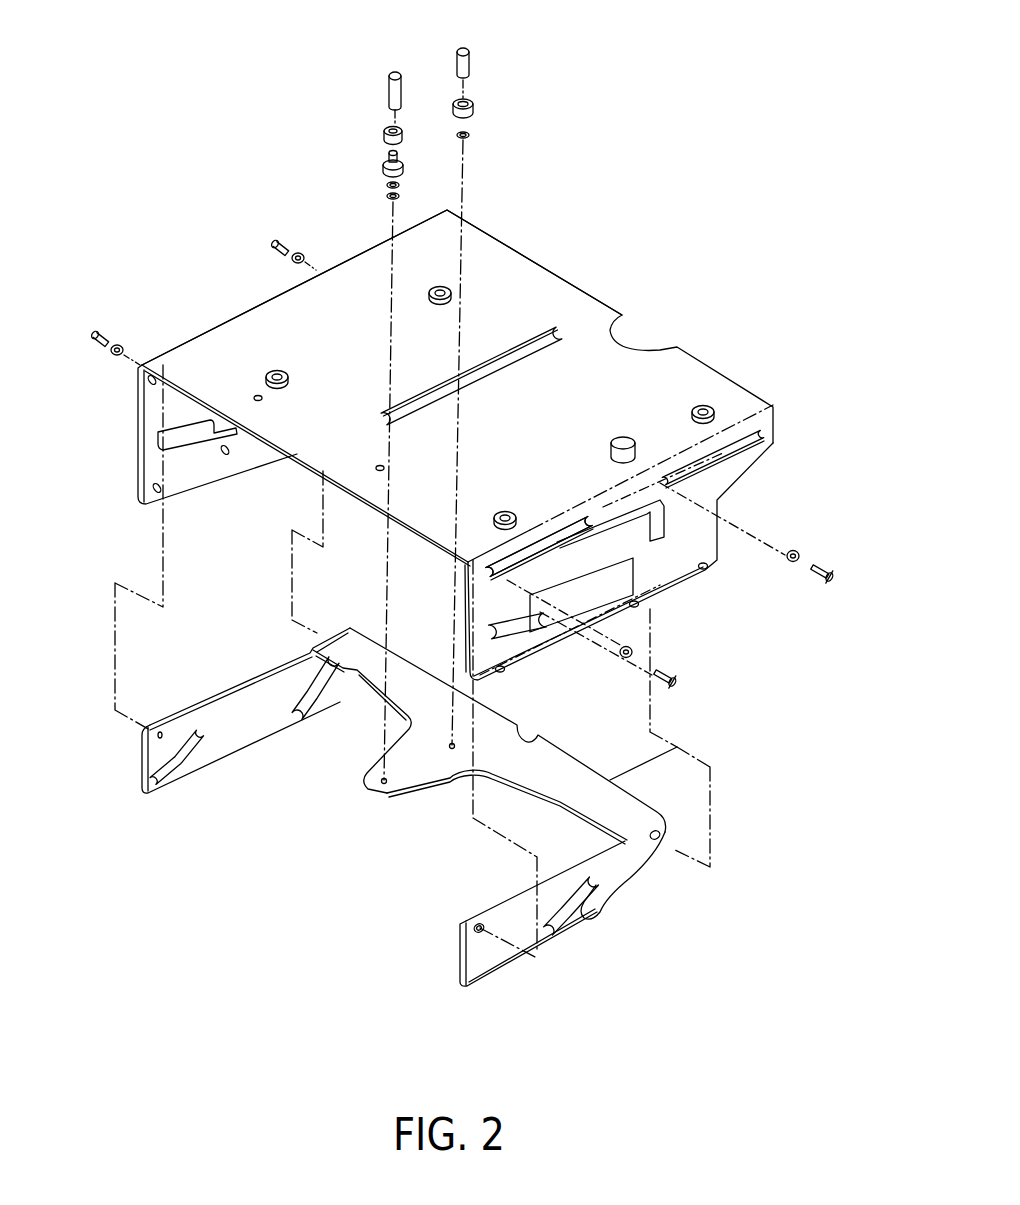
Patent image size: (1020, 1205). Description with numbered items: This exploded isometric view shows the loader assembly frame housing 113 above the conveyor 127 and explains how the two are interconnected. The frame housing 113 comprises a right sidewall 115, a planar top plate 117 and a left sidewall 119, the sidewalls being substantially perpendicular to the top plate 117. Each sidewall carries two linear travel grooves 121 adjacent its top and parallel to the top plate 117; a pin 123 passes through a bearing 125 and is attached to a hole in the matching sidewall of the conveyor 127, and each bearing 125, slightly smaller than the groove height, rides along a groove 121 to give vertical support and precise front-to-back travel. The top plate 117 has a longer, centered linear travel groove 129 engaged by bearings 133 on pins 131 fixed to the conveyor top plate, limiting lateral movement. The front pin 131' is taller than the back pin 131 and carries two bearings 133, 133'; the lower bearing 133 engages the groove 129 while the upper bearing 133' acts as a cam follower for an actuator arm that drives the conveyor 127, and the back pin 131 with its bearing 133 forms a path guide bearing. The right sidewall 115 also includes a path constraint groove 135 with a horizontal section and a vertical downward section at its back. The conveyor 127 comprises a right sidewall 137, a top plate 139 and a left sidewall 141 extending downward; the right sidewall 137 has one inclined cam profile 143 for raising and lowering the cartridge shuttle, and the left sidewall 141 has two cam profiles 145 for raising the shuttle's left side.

The loader assembly frame housing 113 is at (247, 313).
The right sidewall 115 is at (717, 520).
The top plate 117 is at (552, 267).
The left sidewall 119 is at (138, 425).
The linear travel grooves 121 is at (722, 458).
The pin 123 is at (838, 578).
The bearing 125 is at (800, 553).
The conveyor 127 is at (677, 747).
The linear travel groove 129 is at (560, 333).
The pin 131 is at (504, 387).
The front pin 131' is at (348, 406).
The bearing 133 is at (427, 136).
The upper bearing 133' is at (346, 113).
The path constraint groove 135 is at (660, 537).
The right sidewall 137 is at (512, 963).
The top plate 139 is at (527, 743).
The left sidewall 141 is at (142, 763).
The inclined cam profile 143 is at (590, 917).
The cam profiles 145 is at (313, 708).